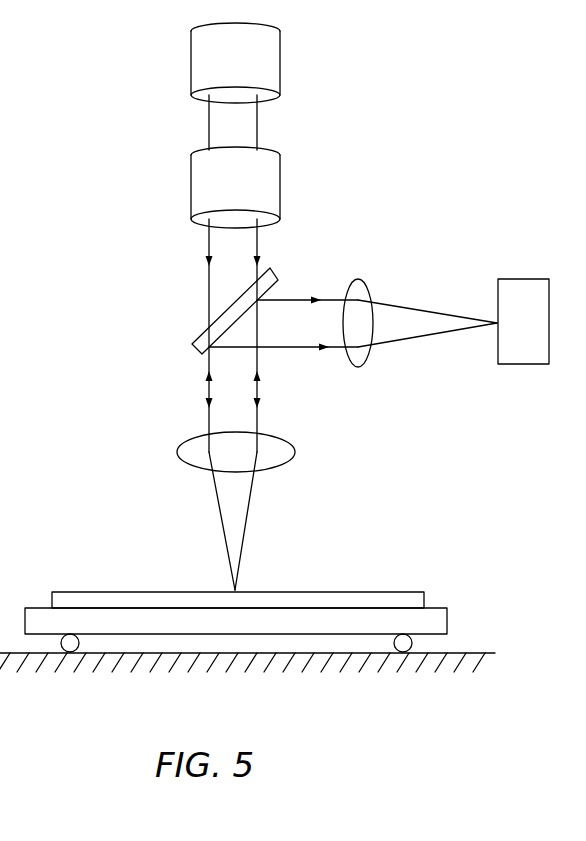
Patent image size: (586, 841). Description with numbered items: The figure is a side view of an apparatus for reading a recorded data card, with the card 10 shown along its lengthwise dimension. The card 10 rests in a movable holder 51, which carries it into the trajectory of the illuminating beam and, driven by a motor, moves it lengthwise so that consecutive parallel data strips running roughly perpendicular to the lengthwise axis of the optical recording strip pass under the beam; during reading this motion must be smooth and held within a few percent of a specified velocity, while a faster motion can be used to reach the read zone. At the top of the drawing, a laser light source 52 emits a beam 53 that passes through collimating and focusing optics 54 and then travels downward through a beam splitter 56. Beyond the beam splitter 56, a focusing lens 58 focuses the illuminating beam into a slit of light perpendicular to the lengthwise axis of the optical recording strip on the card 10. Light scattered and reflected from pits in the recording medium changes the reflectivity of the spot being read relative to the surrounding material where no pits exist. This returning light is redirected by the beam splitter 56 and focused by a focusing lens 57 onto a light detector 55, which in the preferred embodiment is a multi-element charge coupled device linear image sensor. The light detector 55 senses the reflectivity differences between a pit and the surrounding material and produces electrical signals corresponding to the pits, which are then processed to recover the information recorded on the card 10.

The card 10 is at (394, 592).
The movable holder 51 is at (441, 608).
The laser light source 52 is at (280, 63).
The beam 53 is at (245, 123).
The collimating and focusing optics 54 is at (270, 184).
The light detector 55 is at (510, 286).
The beam splitter 56 is at (200, 337).
The focusing lens 57 is at (358, 288).
The focusing lens 58 is at (273, 443).